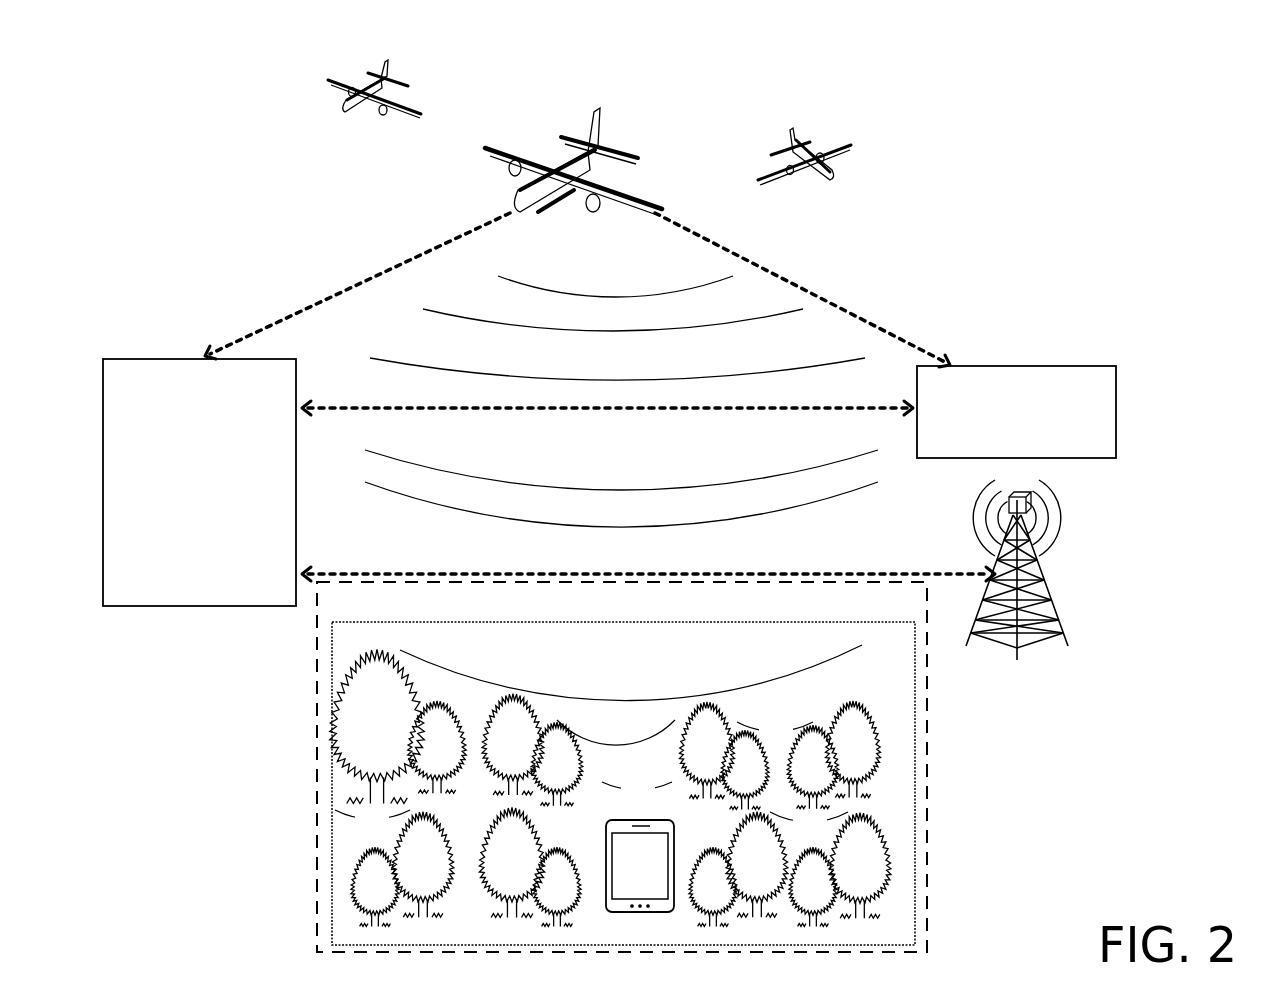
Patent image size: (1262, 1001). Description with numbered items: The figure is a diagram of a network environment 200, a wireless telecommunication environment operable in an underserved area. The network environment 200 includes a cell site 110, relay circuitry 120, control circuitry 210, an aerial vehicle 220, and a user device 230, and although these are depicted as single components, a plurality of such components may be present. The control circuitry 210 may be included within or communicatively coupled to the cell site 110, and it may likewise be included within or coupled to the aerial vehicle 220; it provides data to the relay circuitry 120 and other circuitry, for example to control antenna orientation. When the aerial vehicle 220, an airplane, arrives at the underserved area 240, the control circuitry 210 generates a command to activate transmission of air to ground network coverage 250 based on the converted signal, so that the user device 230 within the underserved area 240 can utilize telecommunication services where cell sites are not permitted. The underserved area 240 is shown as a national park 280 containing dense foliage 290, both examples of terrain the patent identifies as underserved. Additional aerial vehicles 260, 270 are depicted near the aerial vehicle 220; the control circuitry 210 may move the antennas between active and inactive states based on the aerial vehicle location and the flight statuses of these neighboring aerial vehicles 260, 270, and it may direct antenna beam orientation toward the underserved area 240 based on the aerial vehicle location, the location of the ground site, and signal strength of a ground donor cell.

The network environment 200 is at (1140, 104).
The cell site 110 is at (1042, 596).
The relay circuitry 120 is at (1016, 412).
The control circuitry 210 is at (199, 482).
The aerial vehicle 220 is at (636, 152).
The user device 230 is at (640, 866).
The underserved area 240 is at (622, 767).
The air to ground network coverage 250 is at (606, 553).
The aerial vehicle 260 is at (367, 105).
The aerial vehicle 270 is at (795, 175).
The national park 280 is at (622, 783).
The dense foliage 290 is at (377, 727).